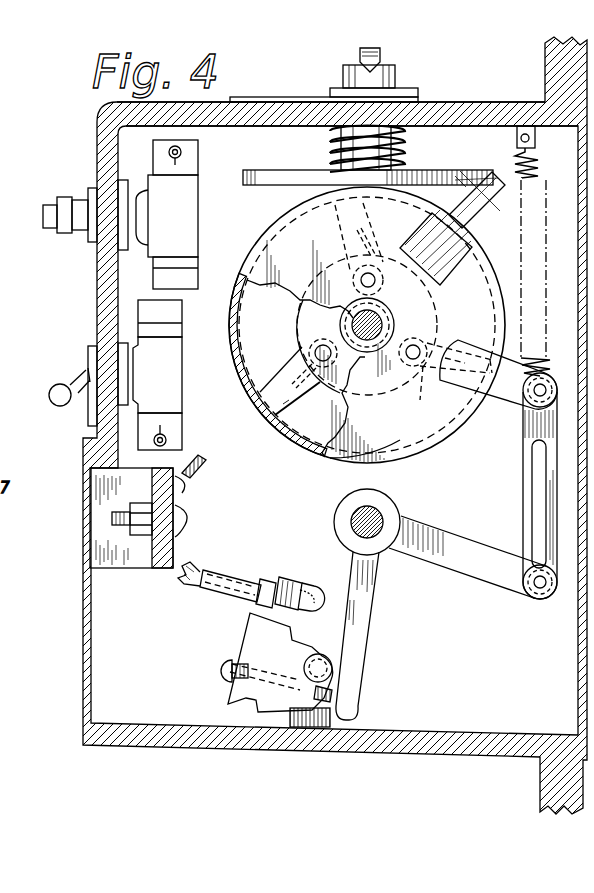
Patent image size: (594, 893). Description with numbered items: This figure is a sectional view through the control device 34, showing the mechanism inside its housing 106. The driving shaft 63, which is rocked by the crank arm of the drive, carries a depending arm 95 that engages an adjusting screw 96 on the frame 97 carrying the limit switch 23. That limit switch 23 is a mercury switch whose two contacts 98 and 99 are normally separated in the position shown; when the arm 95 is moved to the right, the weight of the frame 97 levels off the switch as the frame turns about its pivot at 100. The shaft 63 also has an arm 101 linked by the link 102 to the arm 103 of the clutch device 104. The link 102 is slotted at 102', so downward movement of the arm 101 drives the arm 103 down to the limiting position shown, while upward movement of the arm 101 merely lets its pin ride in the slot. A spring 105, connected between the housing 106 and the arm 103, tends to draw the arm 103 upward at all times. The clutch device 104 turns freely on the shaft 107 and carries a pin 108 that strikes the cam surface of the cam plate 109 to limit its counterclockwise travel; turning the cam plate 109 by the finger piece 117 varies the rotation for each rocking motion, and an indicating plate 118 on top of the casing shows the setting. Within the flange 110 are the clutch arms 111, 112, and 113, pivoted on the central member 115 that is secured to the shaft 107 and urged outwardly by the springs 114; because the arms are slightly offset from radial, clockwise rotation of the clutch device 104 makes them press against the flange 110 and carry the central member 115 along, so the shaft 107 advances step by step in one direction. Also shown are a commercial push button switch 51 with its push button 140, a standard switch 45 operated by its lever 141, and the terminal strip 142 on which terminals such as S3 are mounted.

The control device 34 is at (97, 106).
The housing 106 is at (478, 110).
The indicating plate 118 is at (290, 97).
The finger piece 117 is at (358, 58).
The cam 109 is at (436, 172).
The pin 108 is at (458, 220).
The spring 105 is at (536, 168).
The flange 110 is at (233, 316).
The clutch device 104 is at (426, 456).
The shaft 107 is at (355, 328).
The clutch arm 111 is at (345, 244).
The spring 114 is at (298, 366).
The clutch arm 113 is at (453, 378).
The central member 115 is at (312, 390).
The clutch arm 112 is at (284, 408).
The arm 103 is at (516, 398).
The link 102 is at (514, 495).
The slot 102' is at (506, 504).
The arm 101 is at (497, 584).
The driving shaft 63 is at (378, 540).
The depending arm 95 is at (360, 620).
The frame 97 is at (250, 648).
The pivot 100 is at (330, 670).
The adjusting screw 96 is at (224, 680).
The limit switch 23 is at (248, 608).
The contact 98 is at (275, 612).
The contact 99 is at (292, 634).
The terminal strip 142 is at (160, 571).
The terminal S3 is at (186, 525).
The push button switch 51 is at (158, 214).
The push button 140 is at (42, 216).
The switch 45 is at (150, 375).
The lever 141 is at (68, 378).